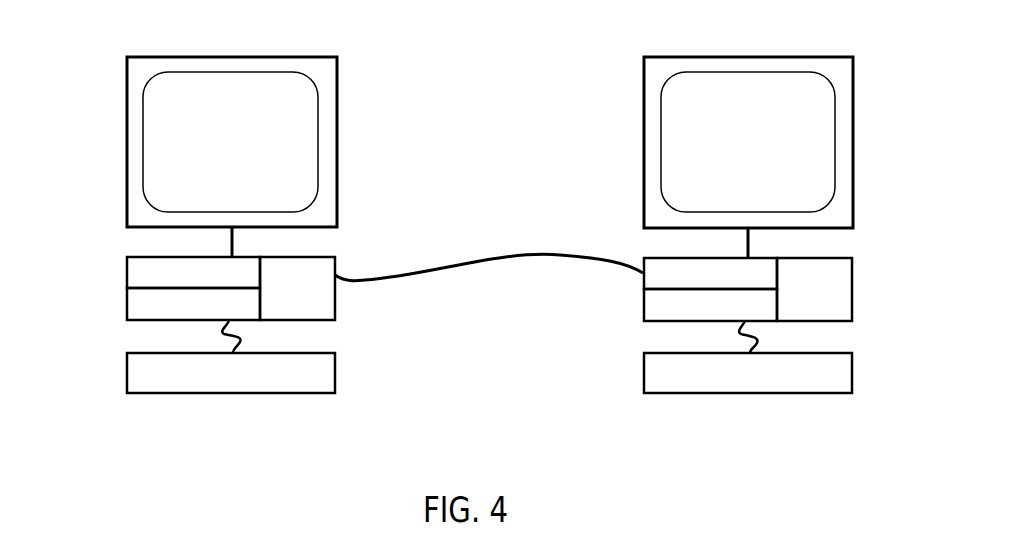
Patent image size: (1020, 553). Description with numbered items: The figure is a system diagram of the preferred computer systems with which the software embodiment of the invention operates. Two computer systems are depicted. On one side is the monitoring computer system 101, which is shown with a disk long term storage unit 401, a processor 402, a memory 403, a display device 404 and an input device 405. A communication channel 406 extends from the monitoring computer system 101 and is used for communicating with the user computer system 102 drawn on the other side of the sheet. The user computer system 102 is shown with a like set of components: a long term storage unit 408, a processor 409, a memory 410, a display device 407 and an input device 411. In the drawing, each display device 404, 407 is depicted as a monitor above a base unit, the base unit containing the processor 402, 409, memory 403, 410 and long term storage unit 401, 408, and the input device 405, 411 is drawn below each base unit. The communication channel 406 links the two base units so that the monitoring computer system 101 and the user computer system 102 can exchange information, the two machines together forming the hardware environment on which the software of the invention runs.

The monitoring computer system 101 is at (753, 205).
The user computer system 102 is at (224, 205).
The disk long term storage unit 401 is at (840, 285).
The processor 402 is at (650, 282).
The memory 403 is at (650, 313).
The display device 404 is at (782, 73).
The input device 405 is at (840, 377).
The communication channel 406 is at (503, 258).
The display device 407 is at (265, 73).
The long term storage unit 408 is at (323, 305).
The processor 409 is at (142, 270).
The memory 410 is at (142, 304).
The input device 411 is at (323, 376).